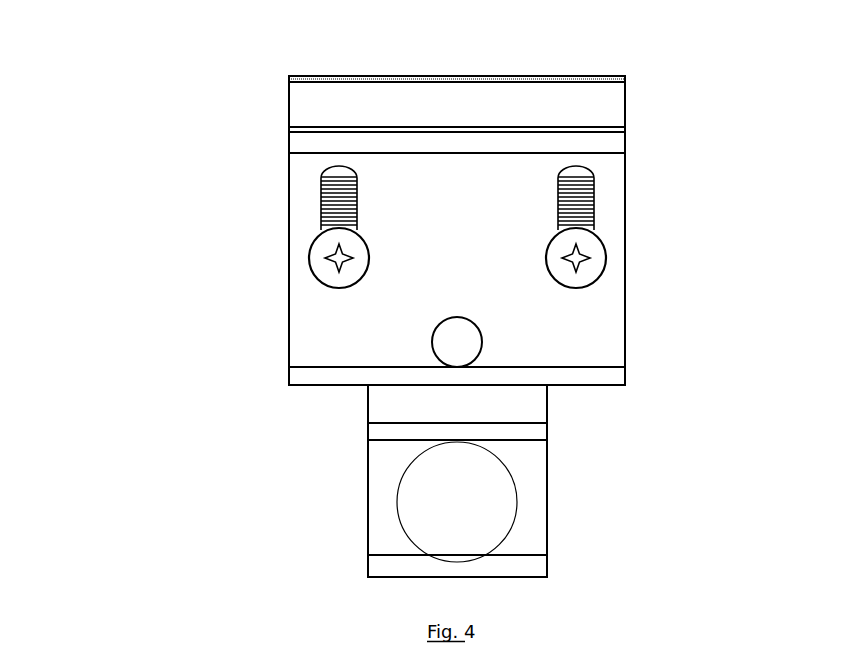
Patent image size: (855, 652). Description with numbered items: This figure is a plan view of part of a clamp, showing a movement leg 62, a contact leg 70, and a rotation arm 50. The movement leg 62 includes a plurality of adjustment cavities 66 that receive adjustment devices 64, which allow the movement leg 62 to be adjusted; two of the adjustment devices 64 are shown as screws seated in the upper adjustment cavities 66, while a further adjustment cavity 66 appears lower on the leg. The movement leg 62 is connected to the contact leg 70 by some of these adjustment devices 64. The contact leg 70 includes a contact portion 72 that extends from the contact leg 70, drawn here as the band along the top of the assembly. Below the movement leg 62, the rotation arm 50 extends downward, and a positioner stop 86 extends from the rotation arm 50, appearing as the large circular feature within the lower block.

The rotation arm 50 is at (532, 544).
The movement leg 62 is at (630, 325).
The adjustment devices 64 is at (347, 247).
The adjustment cavities 66 is at (365, 160).
The contact leg 70 is at (262, 143).
The contact portion 72 is at (613, 98).
The positioner stop 86 is at (483, 482).